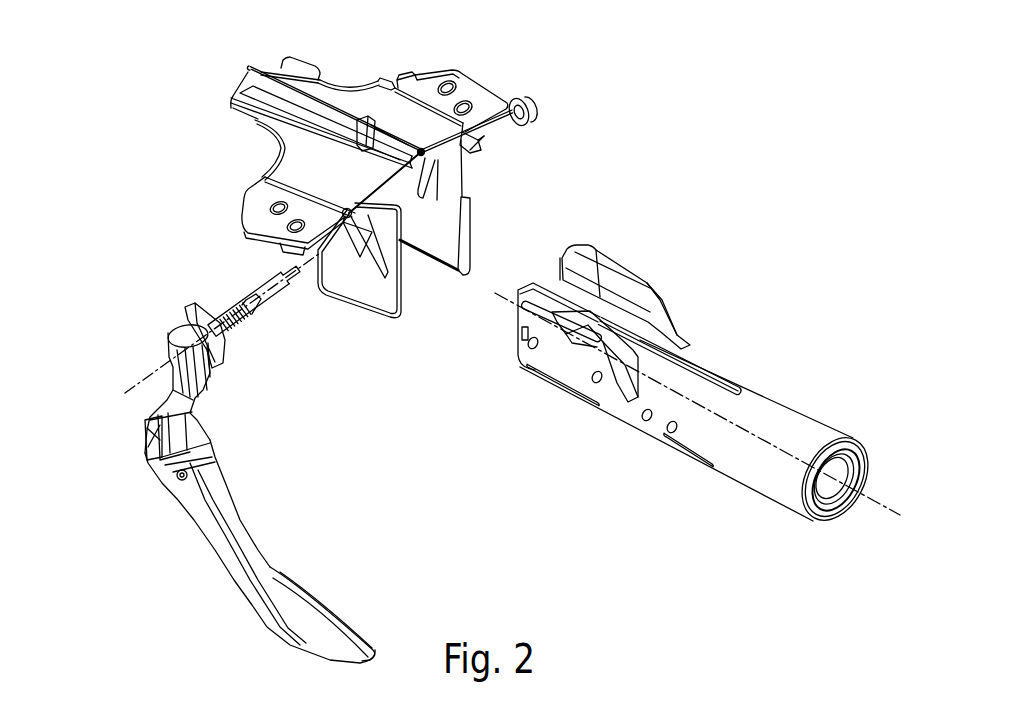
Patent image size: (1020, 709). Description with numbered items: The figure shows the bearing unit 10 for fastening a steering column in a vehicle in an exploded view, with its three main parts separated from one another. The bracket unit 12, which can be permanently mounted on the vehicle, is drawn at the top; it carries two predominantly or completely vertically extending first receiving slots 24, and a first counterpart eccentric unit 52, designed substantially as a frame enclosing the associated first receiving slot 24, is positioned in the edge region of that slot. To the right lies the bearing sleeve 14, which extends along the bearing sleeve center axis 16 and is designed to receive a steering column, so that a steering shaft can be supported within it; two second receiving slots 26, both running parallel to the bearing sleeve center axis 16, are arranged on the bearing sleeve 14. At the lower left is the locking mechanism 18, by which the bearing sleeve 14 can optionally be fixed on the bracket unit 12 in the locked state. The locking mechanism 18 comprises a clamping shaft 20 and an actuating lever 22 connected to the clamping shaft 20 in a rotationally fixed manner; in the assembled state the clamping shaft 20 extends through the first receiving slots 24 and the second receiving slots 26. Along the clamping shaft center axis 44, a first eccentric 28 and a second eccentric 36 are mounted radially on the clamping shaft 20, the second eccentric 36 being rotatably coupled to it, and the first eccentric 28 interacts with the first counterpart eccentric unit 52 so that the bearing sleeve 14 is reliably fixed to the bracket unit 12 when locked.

The bearing unit 10 is at (652, 124).
The bracket unit 12 is at (422, 92).
The bearing sleeve 14 is at (790, 422).
The bearing sleeve center axis 16 is at (871, 495).
The locking mechanism 18 is at (157, 210).
The clamping shaft 20 is at (280, 287).
The actuating lever 22 is at (293, 623).
The first receiving slots 24 is at (424, 175).
The second receiving slots 26 is at (614, 303).
The first eccentric 28 is at (205, 306).
The second eccentric 36 is at (270, 282).
The clamping shaft center axis 44 is at (130, 388).
The first counterpart eccentric unit 52 is at (405, 262).